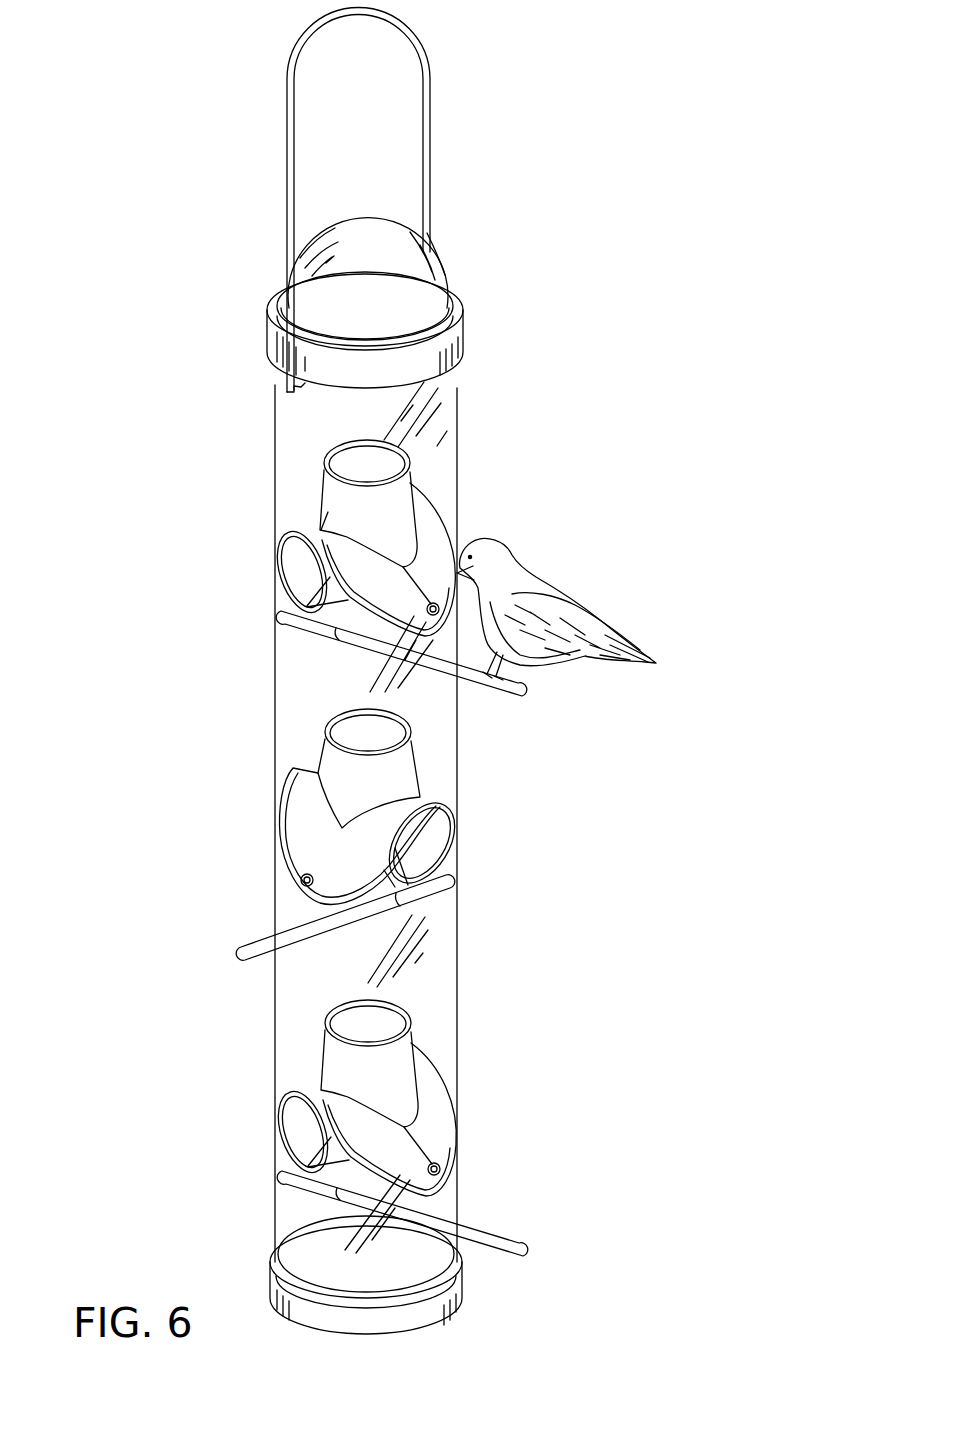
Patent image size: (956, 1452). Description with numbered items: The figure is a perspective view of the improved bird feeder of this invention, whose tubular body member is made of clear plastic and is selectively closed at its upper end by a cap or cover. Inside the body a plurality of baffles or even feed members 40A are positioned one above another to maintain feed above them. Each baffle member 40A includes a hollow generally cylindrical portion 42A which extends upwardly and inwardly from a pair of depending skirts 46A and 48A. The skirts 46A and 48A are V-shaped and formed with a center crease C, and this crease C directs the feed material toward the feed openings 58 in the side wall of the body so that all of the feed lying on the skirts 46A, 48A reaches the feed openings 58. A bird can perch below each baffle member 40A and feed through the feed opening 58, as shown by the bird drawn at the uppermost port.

The baffle or even feed member 40A is at (398, 496).
The hollow generally cylindrical portion 42A is at (345, 512).
The skirt 46A is at (432, 525).
The skirt 48A is at (292, 833).
The feed opening 58 is at (440, 604).
The center crease C is at (407, 572).